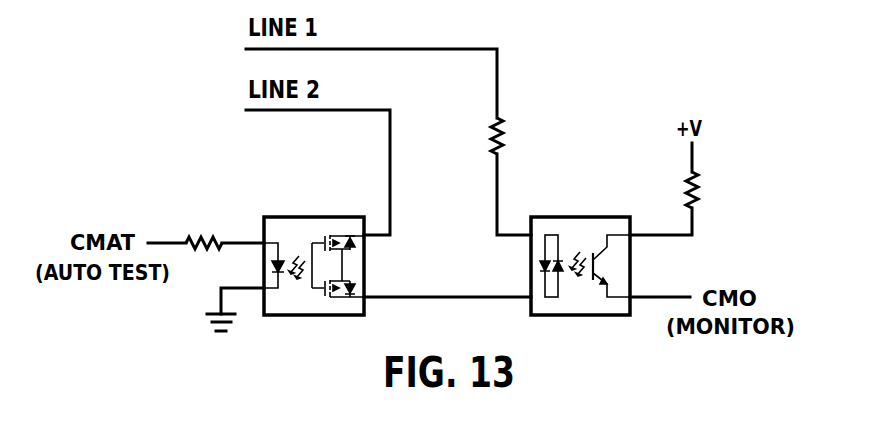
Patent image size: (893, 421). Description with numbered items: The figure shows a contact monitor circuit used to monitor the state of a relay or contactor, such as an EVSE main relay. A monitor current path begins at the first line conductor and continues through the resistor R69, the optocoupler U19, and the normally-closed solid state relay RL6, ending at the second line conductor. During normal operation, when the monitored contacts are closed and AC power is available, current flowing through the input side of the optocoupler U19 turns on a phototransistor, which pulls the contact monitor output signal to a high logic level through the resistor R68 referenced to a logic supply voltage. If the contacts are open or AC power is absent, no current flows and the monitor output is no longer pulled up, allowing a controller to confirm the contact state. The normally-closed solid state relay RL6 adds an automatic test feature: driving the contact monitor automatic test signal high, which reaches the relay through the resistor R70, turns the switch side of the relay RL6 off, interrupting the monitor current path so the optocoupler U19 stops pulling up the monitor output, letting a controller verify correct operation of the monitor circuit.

The resistor R70 is at (206, 227).
The resistor R69 is at (523, 136).
The resistor R68 is at (718, 190).
The normally-closed solid state relay RL6 is at (314, 252).
The optocoupler U19 is at (580, 252).